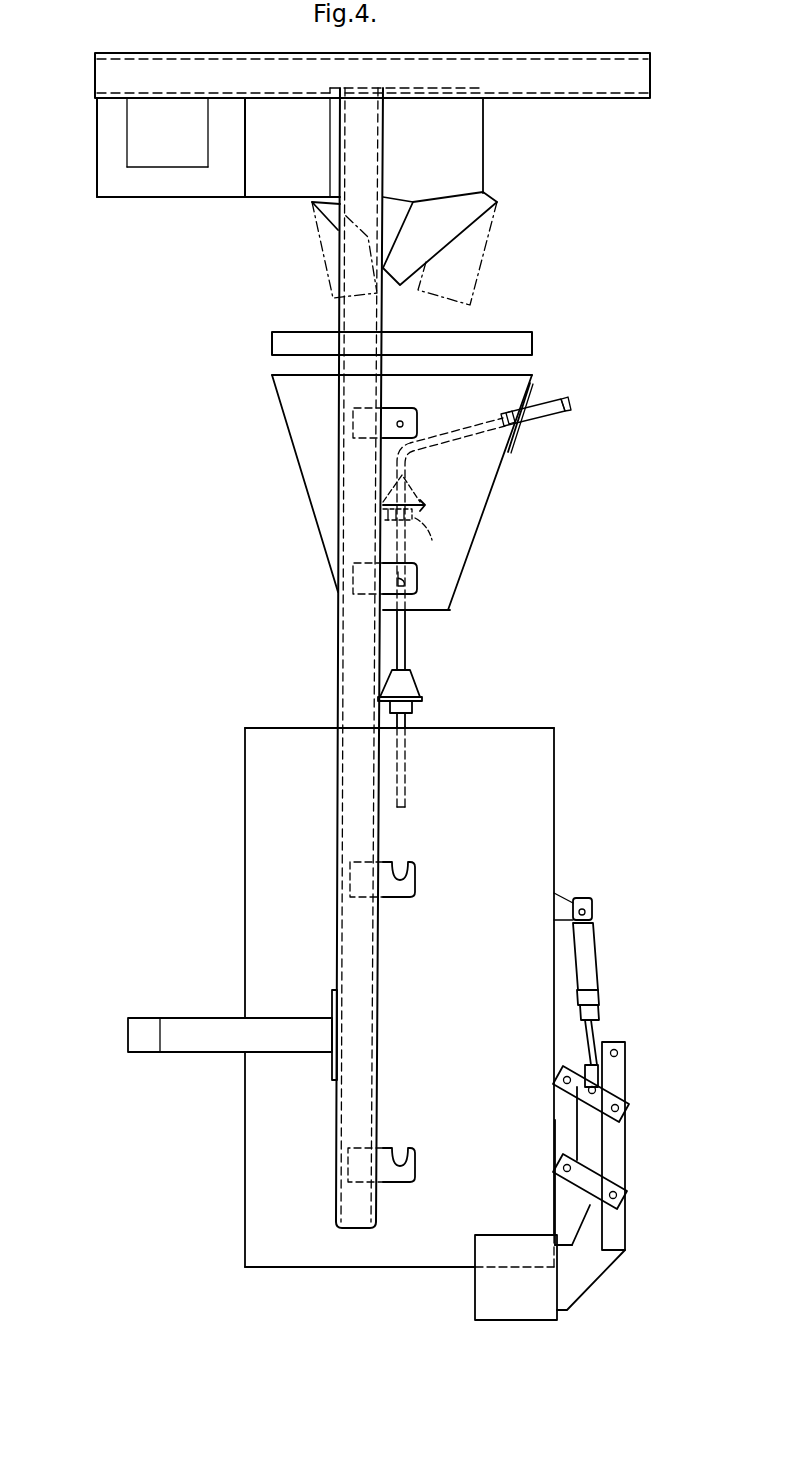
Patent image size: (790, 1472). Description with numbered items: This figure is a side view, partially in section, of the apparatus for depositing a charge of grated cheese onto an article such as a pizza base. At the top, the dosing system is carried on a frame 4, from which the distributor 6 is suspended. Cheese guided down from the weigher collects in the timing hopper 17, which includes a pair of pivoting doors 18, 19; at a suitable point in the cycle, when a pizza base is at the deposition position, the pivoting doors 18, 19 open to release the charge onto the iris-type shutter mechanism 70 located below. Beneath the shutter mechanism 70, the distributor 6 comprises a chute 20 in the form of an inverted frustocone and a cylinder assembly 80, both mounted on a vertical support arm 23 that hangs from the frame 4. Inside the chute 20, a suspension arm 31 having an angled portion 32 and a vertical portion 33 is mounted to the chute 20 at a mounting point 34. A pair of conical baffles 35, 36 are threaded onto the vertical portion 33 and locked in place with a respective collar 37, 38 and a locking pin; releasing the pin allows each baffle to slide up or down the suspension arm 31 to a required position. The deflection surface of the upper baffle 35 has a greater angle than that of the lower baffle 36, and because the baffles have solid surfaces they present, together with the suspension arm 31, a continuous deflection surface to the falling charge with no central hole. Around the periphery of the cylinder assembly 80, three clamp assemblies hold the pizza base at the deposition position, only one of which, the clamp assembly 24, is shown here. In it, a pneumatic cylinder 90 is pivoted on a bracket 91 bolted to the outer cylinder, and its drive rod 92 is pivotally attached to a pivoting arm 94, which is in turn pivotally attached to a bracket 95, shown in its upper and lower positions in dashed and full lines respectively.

The frame 4 is at (95, 80).
The distributor 6 is at (235, 622).
The timing hopper 17 is at (527, 207).
The pivoting door 18 is at (323, 226).
The pivoting door 19 is at (462, 233).
The chute 20 is at (305, 483).
The vertical support arm 23 is at (338, 642).
The clamp assembly 24 is at (655, 1082).
The suspension arm 31 is at (462, 490).
The angled portion 32 is at (443, 440).
The vertical portion 33 is at (410, 648).
The mounting point 34 is at (530, 428).
The upper conical baffle 35 is at (416, 520).
The lower conical baffle 36 is at (420, 706).
The collar 37 is at (340, 530).
The collar 38 is at (383, 715).
The iris-type shutter mechanism 70 is at (272, 345).
The cylinder assembly 80 is at (235, 832).
The pneumatic cylinder 90 is at (595, 960).
The bracket 91 is at (570, 900).
The drive rod 92 is at (598, 1030).
The pivoting arm 94 is at (625, 1118).
The bracket 95 is at (555, 1130).